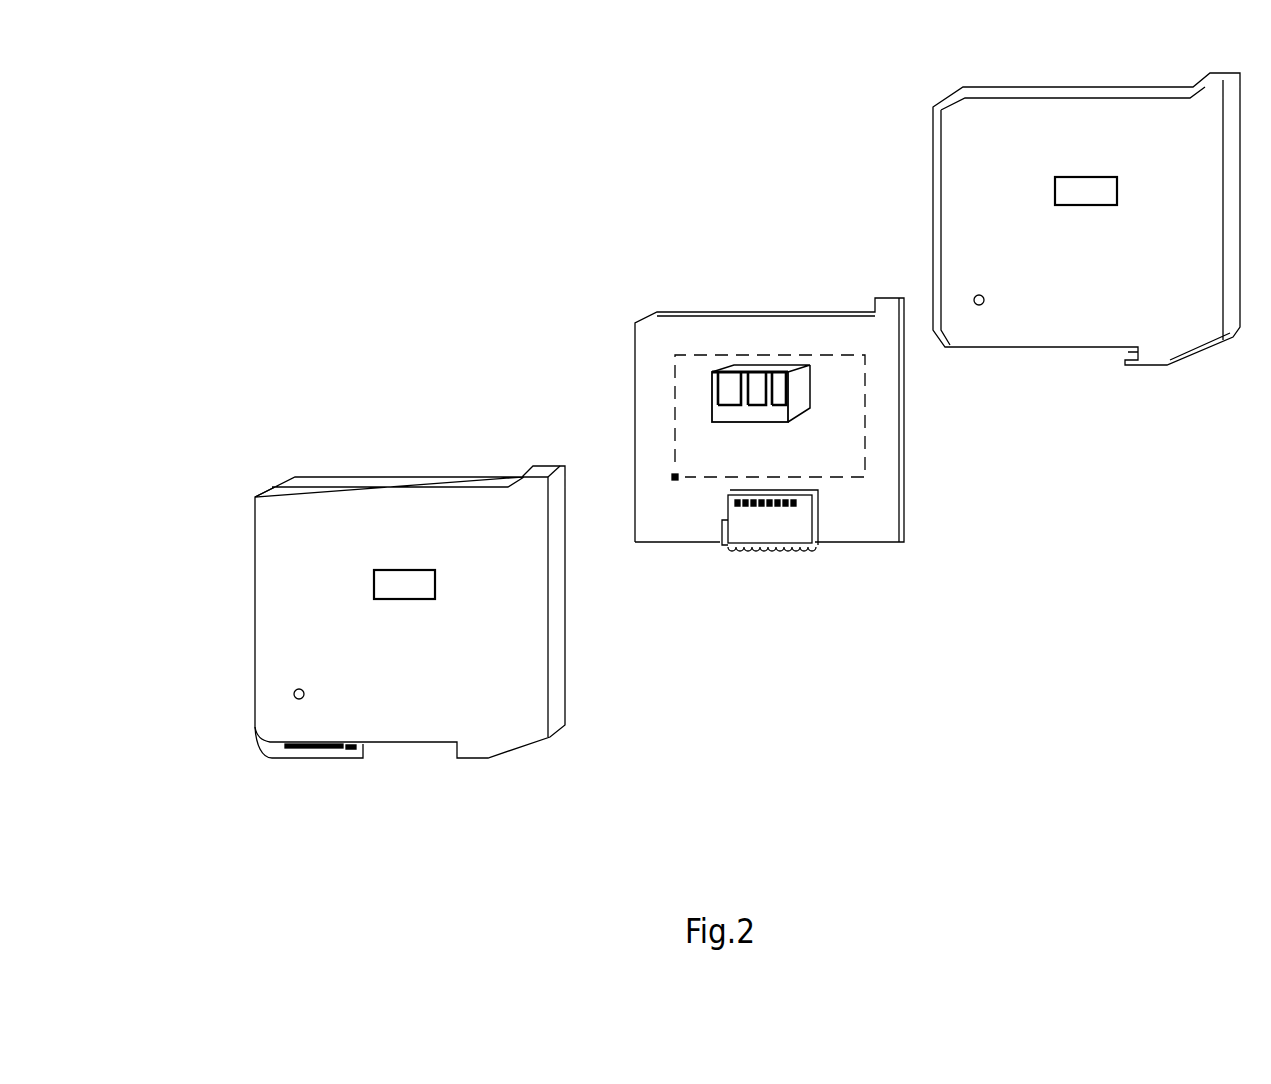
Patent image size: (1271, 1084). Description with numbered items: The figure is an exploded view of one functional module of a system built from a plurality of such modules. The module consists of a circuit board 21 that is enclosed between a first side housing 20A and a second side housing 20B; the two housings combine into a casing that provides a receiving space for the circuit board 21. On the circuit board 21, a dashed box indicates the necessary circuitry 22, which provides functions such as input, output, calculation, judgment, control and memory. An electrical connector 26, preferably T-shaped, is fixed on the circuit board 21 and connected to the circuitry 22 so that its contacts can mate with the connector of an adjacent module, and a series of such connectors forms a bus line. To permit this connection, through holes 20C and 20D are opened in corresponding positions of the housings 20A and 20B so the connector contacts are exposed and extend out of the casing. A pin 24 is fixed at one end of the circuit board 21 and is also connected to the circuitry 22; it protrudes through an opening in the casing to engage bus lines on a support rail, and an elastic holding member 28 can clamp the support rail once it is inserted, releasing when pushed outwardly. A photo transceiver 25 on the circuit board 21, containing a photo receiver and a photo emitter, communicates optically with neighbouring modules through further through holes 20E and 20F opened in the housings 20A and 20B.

The first side housing 20A is at (390, 505).
The second side housing 20B is at (1108, 93).
The through hole 20C is at (378, 583).
The through hole 20D is at (1108, 188).
The through hole 20E is at (294, 690).
The through hole 20F is at (985, 298).
The circuit board 21 is at (875, 330).
The circuitry 22 is at (848, 450).
The pin 24 is at (760, 552).
The photo transceiver 25 is at (664, 475).
The electrical connector 26 is at (708, 385).
The elastic holding member 28 is at (327, 748).